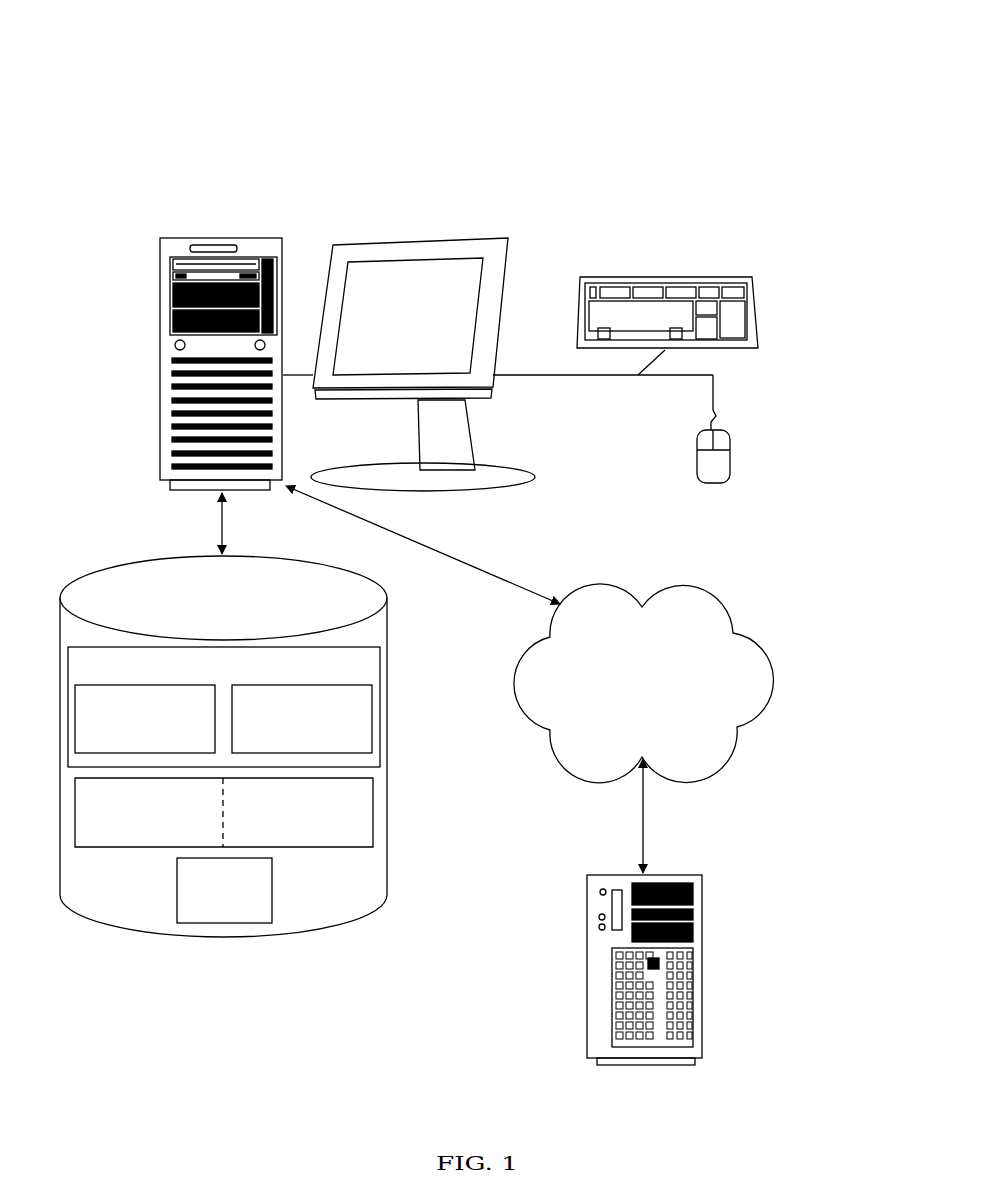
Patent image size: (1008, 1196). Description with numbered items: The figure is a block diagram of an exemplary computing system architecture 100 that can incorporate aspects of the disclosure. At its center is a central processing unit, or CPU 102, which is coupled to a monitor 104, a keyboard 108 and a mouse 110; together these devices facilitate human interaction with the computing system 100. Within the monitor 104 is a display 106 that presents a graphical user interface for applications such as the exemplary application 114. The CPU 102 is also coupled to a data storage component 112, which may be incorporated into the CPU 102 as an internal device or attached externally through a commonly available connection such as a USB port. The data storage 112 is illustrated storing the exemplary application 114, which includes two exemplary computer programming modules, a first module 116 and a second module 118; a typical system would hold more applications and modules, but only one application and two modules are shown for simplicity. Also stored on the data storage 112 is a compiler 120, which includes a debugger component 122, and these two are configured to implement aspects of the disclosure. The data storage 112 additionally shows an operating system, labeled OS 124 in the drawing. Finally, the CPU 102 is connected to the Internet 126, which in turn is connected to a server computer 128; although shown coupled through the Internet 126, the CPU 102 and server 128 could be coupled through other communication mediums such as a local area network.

The computing system architecture 100 is at (400, 104).
The central processing unit 102 is at (281, 238).
The monitor 104 is at (498, 313).
The display 106 is at (392, 342).
The keyboard 108 is at (725, 285).
The mouse 110 is at (708, 487).
The data storage component 112 is at (241, 629).
The application (App_1) 114 is at (276, 679).
The Module_1 116 is at (163, 744).
The Module_2 118 is at (285, 744).
The compiler 120 is at (165, 836).
The debugger component 122 is at (315, 836).
The OS 124 is at (242, 914).
The Internet 126 is at (659, 706).
The server computer 128 is at (702, 968).